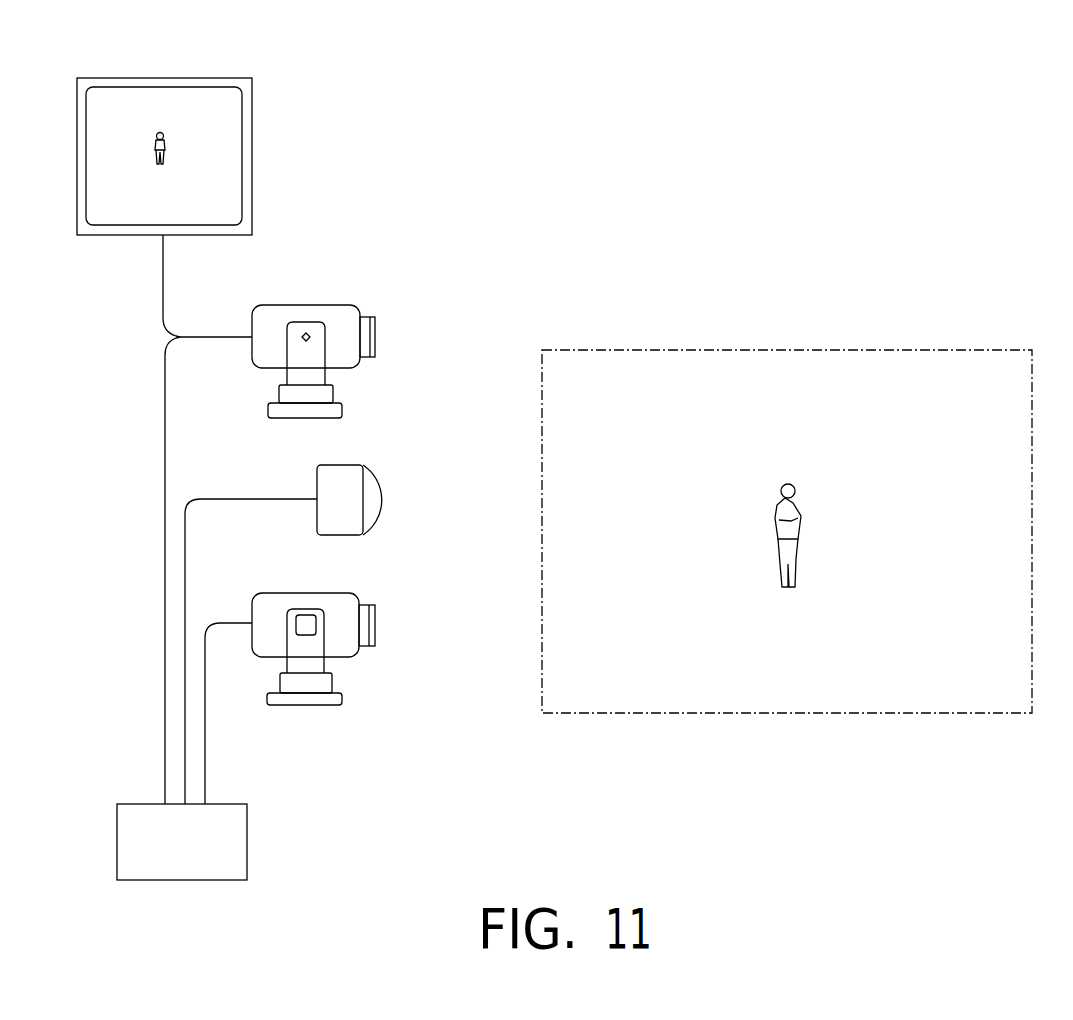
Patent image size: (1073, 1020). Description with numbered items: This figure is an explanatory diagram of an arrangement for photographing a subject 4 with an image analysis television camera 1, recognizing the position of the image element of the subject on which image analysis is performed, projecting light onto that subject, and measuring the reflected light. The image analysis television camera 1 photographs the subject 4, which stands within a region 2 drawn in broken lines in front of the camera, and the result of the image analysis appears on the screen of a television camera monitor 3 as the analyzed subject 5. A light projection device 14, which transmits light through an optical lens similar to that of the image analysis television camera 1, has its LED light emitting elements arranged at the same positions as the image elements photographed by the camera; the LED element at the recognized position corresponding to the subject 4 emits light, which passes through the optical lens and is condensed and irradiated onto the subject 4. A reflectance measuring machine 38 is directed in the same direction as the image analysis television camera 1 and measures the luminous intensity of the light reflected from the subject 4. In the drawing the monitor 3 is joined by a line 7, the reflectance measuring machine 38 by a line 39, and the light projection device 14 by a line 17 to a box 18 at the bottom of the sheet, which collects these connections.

The image analysis television camera 1 is at (341, 304).
The imaging area 2 is at (660, 350).
The television camera monitor 3 is at (156, 77).
The subject 4 is at (767, 494).
The subject subjected to image analysis 5 is at (168, 146).
The cable to display 7 is at (161, 281).
The light projection device 14 is at (360, 594).
The cable to second camera 17 is at (205, 760).
The control device 18 is at (248, 838).
The reflectance measuring machine 38 is at (360, 464).
The cable to sensor 39 is at (186, 567).